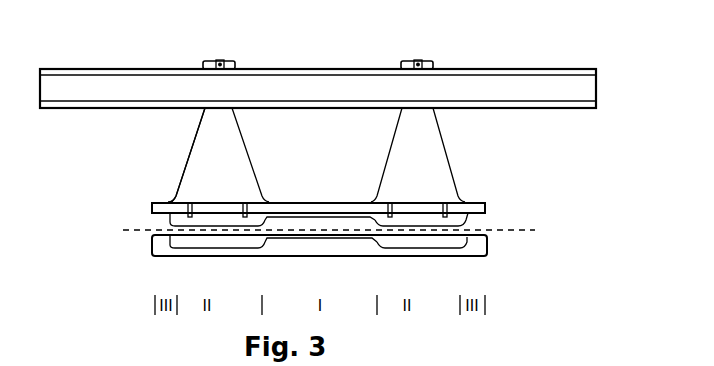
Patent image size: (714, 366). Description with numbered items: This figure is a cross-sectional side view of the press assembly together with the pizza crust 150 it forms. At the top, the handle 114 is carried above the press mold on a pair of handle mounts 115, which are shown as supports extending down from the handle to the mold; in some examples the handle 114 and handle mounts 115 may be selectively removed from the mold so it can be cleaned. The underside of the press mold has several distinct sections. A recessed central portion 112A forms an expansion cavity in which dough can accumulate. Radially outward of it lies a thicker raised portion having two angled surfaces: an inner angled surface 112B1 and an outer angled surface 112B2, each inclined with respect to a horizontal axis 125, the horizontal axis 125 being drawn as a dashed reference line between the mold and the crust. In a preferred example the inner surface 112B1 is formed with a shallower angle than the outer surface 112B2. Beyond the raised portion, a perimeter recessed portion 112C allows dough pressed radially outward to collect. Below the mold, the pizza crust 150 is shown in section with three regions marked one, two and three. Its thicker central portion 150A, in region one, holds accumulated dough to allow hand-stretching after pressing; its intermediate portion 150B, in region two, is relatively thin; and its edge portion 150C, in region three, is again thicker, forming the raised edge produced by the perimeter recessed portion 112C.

The handle 114 is at (518, 69).
The handle mounts 115 is at (428, 162).
The recessed central portion 112A is at (305, 215).
The angled surface 112B1 is at (407, 225).
The angled surface 112B2 is at (448, 226).
The perimeter recessed portion 112C is at (160, 213).
The horizontal axis 125 is at (123, 230).
The pizza crust 150 is at (489, 245).
The central portion 150A is at (330, 245).
The intermediate portion 150B is at (425, 255).
The edge portion 150C is at (151, 245).